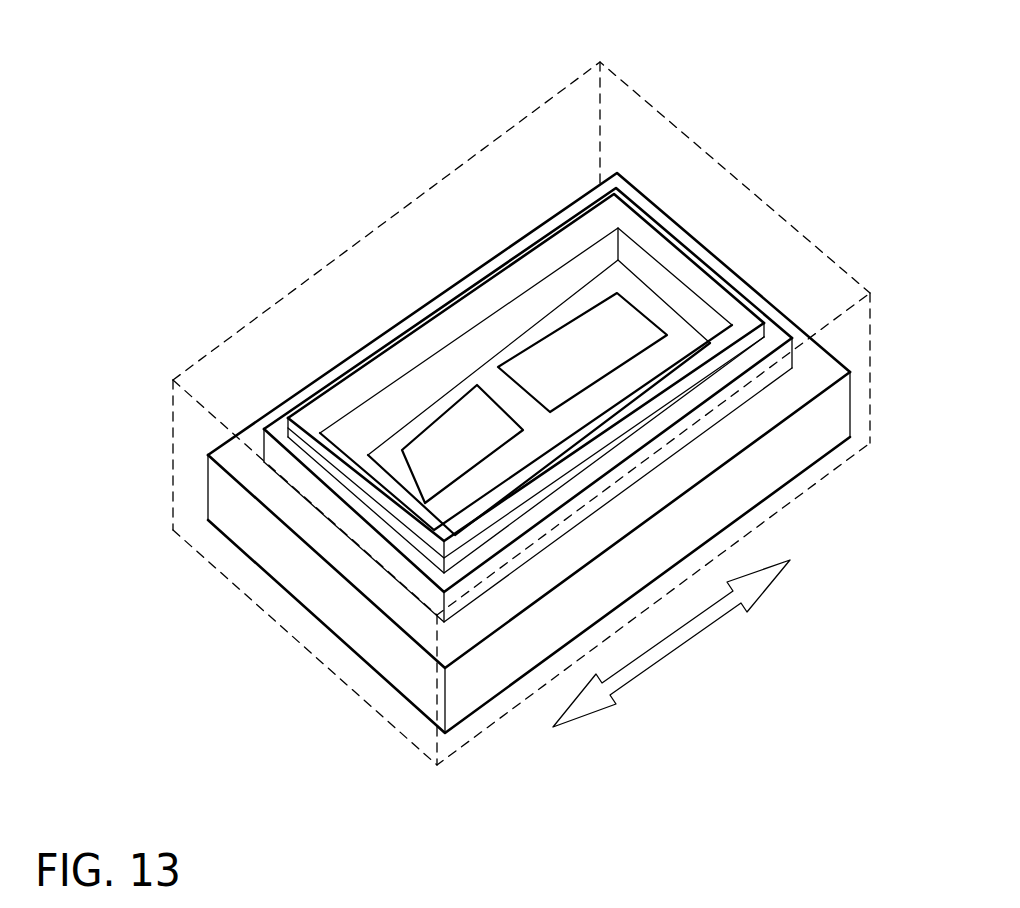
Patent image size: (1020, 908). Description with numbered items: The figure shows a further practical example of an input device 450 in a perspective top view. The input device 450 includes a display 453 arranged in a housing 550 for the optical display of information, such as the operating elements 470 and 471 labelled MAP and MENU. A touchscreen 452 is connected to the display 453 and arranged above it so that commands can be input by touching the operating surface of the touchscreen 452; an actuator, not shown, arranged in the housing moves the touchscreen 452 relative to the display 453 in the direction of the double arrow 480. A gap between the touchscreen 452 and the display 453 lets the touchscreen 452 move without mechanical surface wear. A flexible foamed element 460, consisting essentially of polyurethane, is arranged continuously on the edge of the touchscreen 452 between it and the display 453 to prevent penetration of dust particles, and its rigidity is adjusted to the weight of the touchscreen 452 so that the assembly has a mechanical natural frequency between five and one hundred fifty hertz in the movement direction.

The input device 450 is at (772, 194).
The housing 550 is at (173, 423).
The display 453 is at (345, 605).
The flexible foamed element 460 is at (295, 457).
The touchscreen 452 is at (352, 425).
The operating element 470 is at (476, 400).
The operating element 471 is at (607, 303).
The double arrow 480 is at (673, 648).